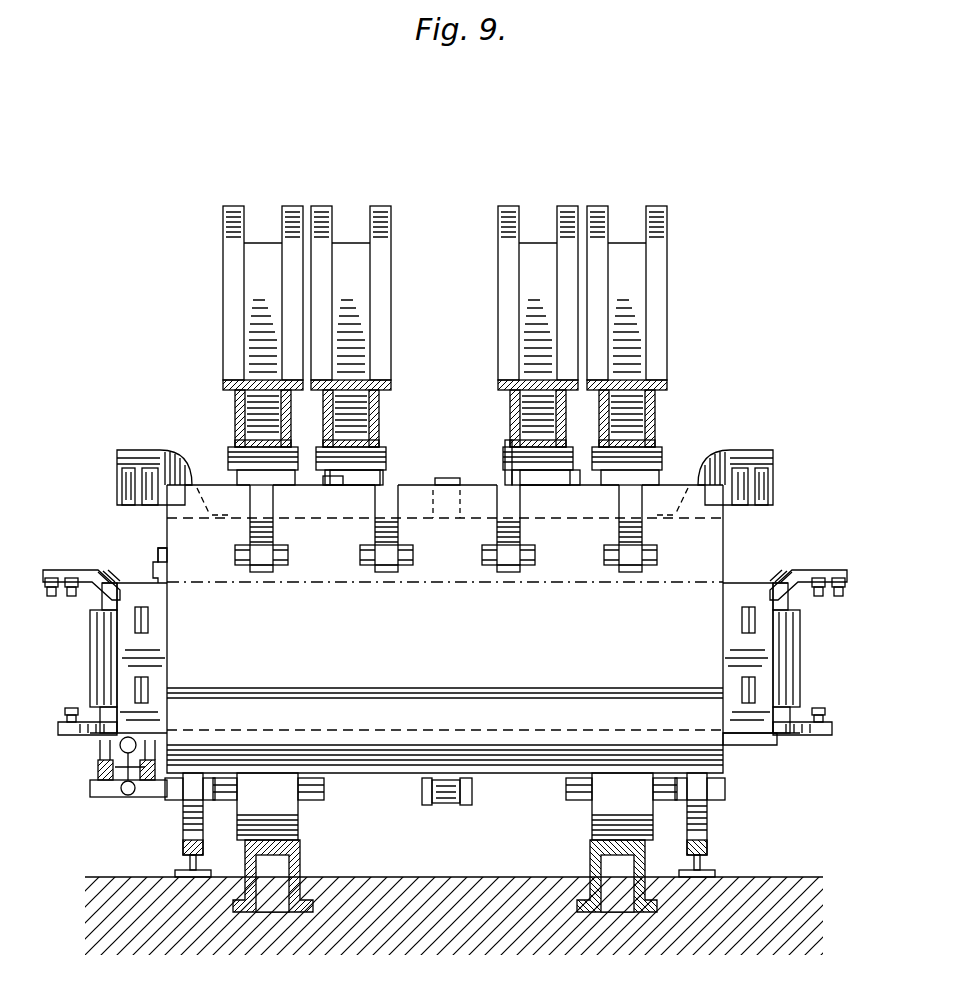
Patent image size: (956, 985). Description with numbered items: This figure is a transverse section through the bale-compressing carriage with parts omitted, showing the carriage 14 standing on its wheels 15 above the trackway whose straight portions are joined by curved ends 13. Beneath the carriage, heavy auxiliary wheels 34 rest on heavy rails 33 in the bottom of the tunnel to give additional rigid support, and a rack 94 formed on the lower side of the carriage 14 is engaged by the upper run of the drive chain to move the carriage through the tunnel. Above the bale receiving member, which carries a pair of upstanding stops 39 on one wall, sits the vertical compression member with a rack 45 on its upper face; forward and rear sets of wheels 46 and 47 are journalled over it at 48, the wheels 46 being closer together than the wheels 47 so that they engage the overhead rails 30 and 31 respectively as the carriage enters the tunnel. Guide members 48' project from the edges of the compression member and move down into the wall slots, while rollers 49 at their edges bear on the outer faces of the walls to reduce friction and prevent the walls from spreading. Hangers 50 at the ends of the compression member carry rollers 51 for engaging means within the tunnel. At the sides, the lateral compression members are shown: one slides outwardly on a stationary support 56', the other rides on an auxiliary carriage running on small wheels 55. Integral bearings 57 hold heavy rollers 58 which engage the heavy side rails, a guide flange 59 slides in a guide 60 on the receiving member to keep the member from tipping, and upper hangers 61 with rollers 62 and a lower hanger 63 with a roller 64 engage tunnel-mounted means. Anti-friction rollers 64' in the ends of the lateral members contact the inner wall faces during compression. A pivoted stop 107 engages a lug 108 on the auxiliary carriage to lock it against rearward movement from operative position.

The curved ends 13 is at (186, 870).
The carriage 14 is at (530, 776).
The wheels 15 is at (183, 820).
The overhead rails 30 is at (505, 352).
The overhead rails 31 is at (223, 348).
The heavy rails 33 is at (300, 852).
The auxiliary wheels 34 is at (300, 805).
The upstanding stops 39 is at (322, 470).
The rack 45 is at (445, 485).
The forward wheels 46 is at (380, 455).
The rear wheels 47 is at (232, 458).
The journals 48 is at (416, 527).
The guide members 48' is at (385, 547).
The rollers 49 is at (272, 548).
The hangers 50 is at (145, 455).
The rollers 51 is at (130, 505).
The small wheels 55 is at (95, 765).
The stationary support 56' is at (753, 756).
The bearings 57 is at (800, 612).
The heavy rollers 58 is at (90, 660).
The guide flange 59 is at (170, 583).
The guide 60 is at (167, 568).
The upper hangers 61 is at (90, 570).
The rollers 62 is at (55, 596).
The lower hanger 63 is at (85, 735).
The roller 64 is at (446, 702).
The anti-friction rollers 64' is at (445, 655).
The rack 94 is at (422, 790).
The pivoted stop 107 is at (150, 738).
The lug 108 is at (160, 745).